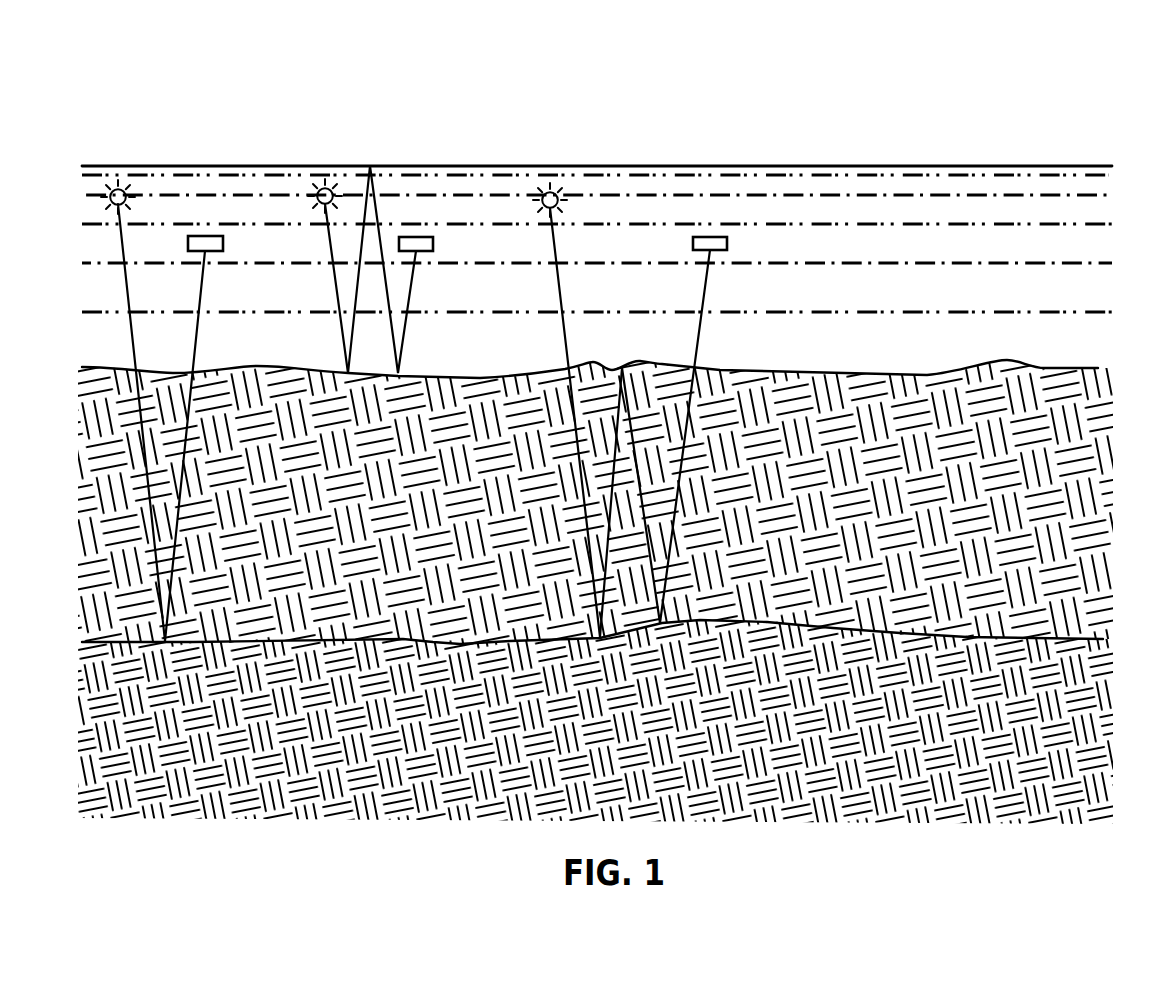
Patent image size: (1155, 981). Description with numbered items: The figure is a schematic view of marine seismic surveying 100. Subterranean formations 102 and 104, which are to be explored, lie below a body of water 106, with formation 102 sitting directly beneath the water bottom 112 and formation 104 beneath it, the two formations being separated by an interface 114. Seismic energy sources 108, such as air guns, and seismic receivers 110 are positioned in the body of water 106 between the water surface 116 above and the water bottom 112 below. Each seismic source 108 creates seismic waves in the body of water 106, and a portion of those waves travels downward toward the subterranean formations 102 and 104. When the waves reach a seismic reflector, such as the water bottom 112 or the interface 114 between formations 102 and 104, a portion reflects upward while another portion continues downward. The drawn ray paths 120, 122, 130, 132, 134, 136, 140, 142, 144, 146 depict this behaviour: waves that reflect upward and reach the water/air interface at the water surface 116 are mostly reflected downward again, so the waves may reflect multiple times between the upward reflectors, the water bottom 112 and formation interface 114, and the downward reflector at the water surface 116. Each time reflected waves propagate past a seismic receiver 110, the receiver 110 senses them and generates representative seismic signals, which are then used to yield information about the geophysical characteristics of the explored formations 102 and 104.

The marine seismic surveying 100 is at (234, 140).
The subterranean formation 102 is at (572, 490).
The subterranean formation 104 is at (535, 726).
The body of water 106 is at (317, 355).
The seismic energy source 108 is at (117, 182).
The seismic receiver 110 is at (223, 238).
The water bottom 112 is at (1062, 368).
The interface 114 is at (1078, 638).
The water surface 116 is at (953, 166).
The downgoing primary wavefield 120 is at (127, 290).
The upgoing reflected primary wavefield 122 is at (198, 336).
The downgoing wavefield 130 is at (336, 286).
The water-bottom reflected upgoing wavefield 132 is at (357, 297).
The surface-reflected multiple wavefield 134 is at (366, 215).
The downgoing multiple wavefield 136 is at (399, 342).
The downgoing wavefield 140 is at (560, 291).
The upgoing reflected wavefield 142 is at (593, 400).
The downgoing interbed multiple wavefield 144 is at (650, 395).
The upgoing wavefield to receiver 146 is at (699, 342).